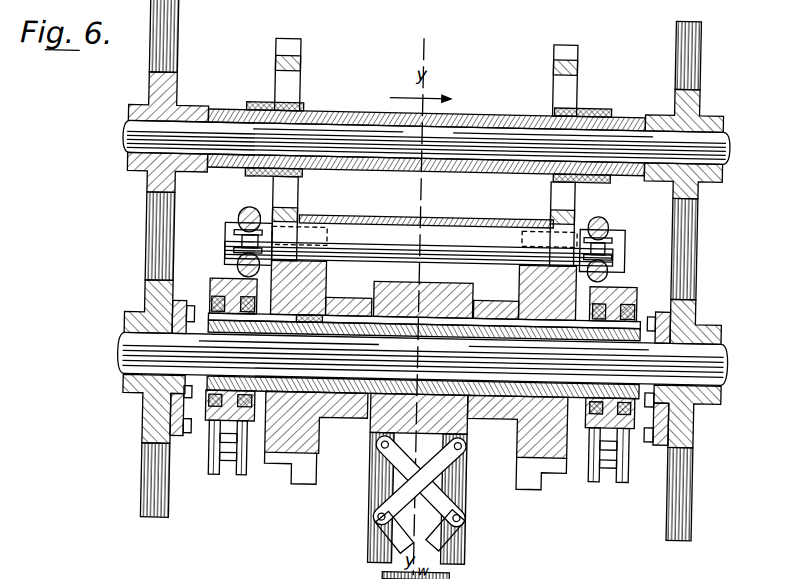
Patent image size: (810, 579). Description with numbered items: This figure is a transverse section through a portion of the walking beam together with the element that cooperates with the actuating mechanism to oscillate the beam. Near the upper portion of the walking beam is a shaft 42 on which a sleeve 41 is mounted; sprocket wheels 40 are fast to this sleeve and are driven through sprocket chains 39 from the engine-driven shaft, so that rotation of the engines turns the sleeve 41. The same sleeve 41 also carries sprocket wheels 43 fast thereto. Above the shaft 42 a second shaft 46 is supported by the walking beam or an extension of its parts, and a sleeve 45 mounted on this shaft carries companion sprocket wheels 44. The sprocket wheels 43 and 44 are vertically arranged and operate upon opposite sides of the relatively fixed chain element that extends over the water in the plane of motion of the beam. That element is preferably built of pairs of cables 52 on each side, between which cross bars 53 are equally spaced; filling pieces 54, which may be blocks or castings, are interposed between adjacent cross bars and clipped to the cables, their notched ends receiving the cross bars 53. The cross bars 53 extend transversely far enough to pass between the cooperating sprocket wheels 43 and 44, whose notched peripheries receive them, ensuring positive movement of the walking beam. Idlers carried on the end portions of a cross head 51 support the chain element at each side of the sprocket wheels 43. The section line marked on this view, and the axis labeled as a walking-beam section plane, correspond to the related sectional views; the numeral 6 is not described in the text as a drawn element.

The lazy-tongs links 6 is at (449, 502).
The sprocket chains 39 is at (221, 481).
The sprocket wheels 40 is at (208, 297).
The sleeve 41 is at (493, 301).
The shaft 42 is at (730, 357).
The sprocket wheels 43 is at (316, 436).
The companion sprocket wheels 44 is at (284, 80).
The sleeve 45 is at (494, 123).
The shaft 46 is at (727, 139).
The cross head 51 is at (175, 401).
The cables 52 is at (248, 213).
The cross bars 53 is at (359, 241).
The filling pieces 54 is at (619, 229).